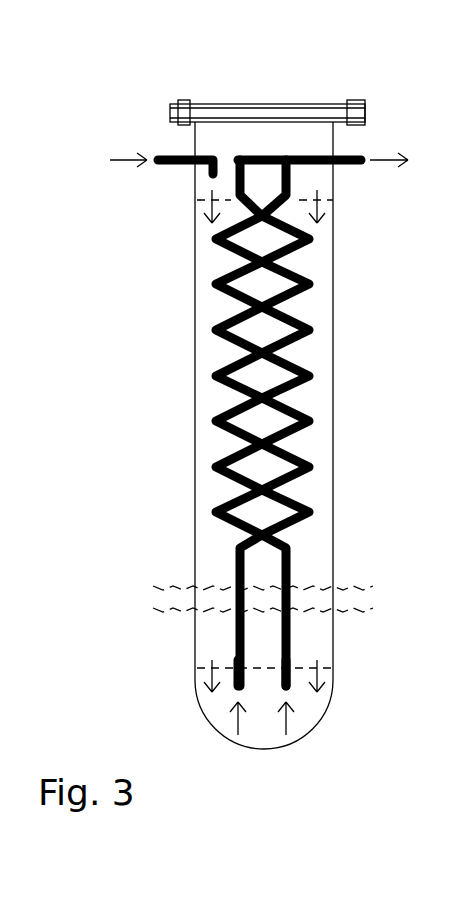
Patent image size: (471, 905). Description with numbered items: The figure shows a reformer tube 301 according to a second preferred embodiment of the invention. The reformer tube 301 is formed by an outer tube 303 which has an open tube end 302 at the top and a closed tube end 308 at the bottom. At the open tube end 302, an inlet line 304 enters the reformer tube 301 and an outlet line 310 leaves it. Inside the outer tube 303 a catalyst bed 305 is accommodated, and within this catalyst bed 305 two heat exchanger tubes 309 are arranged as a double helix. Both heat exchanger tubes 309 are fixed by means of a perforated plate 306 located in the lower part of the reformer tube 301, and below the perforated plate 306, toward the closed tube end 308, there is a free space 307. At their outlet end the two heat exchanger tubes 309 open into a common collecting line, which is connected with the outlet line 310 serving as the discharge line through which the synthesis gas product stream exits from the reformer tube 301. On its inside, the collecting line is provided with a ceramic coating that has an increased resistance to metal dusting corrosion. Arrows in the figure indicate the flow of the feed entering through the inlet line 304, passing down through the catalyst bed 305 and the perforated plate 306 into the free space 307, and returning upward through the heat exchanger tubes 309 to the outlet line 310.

The reformer tube 301 is at (178, 475).
The open tube end 302 is at (313, 102).
The outer tube 303 is at (195, 295).
The inlet line 304 is at (197, 158).
The catalyst bed 305 is at (222, 563).
The perforated plate 306 is at (197, 670).
The free space 307 is at (302, 702).
The closed tube end 308 is at (318, 720).
The heat exchanger tube 309 is at (283, 646).
The outlet line 310 is at (348, 153).